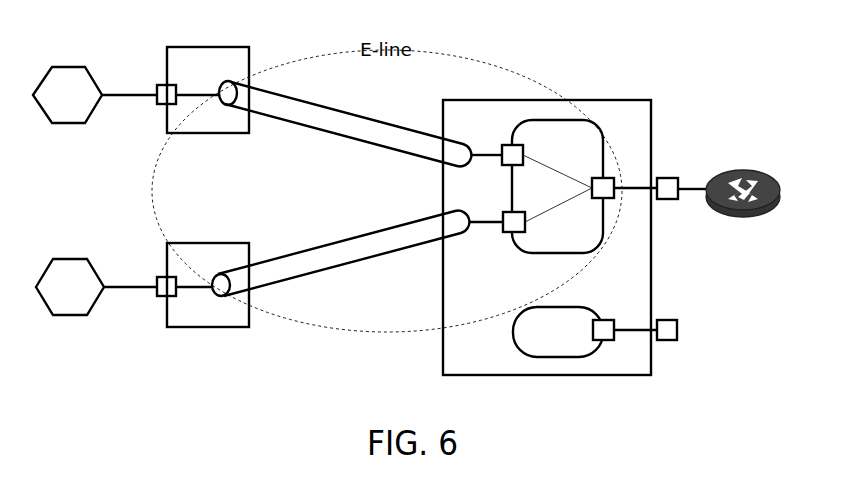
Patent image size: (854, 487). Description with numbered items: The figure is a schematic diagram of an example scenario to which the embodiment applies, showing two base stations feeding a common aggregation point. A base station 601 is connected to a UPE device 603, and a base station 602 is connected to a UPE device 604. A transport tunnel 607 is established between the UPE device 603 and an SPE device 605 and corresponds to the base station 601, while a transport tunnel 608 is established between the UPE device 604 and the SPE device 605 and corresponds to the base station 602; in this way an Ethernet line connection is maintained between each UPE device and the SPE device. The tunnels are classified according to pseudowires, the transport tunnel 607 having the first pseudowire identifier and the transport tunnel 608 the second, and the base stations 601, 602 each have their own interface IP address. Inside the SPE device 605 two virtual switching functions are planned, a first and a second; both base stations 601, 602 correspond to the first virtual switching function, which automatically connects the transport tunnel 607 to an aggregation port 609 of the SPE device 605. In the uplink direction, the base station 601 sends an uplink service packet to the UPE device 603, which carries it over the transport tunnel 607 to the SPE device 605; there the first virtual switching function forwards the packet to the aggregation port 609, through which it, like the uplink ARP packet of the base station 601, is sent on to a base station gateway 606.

The base station 601 is at (92, 117).
The base station 602 is at (92, 310).
The UPE device 603 is at (205, 73).
The UPE device 604 is at (205, 299).
The SPE device 605 is at (560, 250).
The base station gateway 606 is at (731, 216).
The transport tunnel 607 is at (360, 131).
The transport tunnel 608 is at (357, 246).
The aggregation port 609 is at (681, 176).